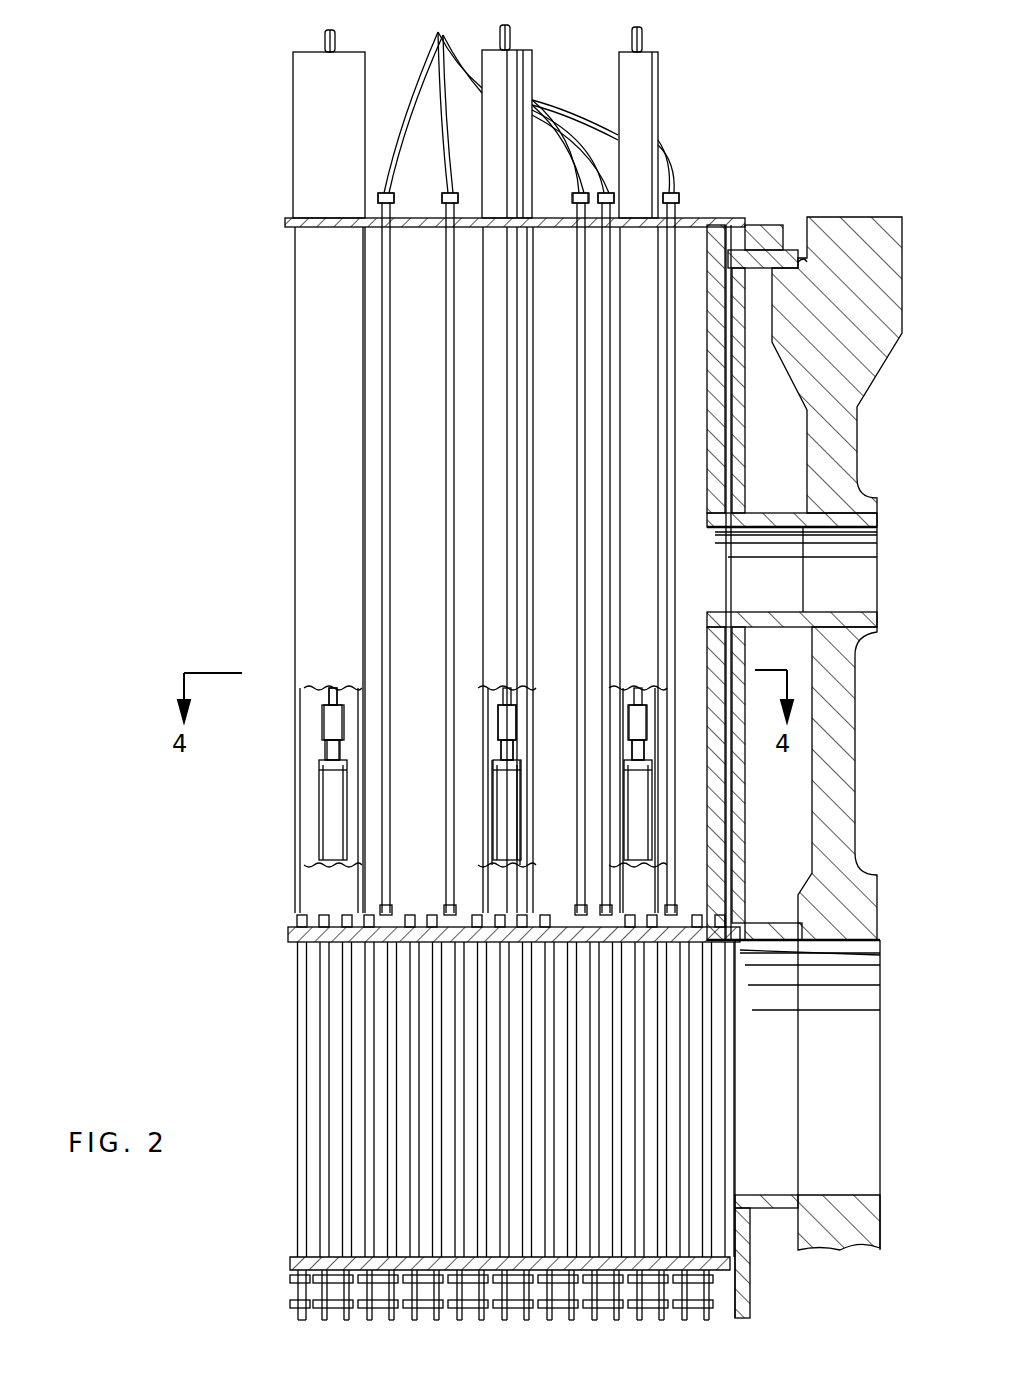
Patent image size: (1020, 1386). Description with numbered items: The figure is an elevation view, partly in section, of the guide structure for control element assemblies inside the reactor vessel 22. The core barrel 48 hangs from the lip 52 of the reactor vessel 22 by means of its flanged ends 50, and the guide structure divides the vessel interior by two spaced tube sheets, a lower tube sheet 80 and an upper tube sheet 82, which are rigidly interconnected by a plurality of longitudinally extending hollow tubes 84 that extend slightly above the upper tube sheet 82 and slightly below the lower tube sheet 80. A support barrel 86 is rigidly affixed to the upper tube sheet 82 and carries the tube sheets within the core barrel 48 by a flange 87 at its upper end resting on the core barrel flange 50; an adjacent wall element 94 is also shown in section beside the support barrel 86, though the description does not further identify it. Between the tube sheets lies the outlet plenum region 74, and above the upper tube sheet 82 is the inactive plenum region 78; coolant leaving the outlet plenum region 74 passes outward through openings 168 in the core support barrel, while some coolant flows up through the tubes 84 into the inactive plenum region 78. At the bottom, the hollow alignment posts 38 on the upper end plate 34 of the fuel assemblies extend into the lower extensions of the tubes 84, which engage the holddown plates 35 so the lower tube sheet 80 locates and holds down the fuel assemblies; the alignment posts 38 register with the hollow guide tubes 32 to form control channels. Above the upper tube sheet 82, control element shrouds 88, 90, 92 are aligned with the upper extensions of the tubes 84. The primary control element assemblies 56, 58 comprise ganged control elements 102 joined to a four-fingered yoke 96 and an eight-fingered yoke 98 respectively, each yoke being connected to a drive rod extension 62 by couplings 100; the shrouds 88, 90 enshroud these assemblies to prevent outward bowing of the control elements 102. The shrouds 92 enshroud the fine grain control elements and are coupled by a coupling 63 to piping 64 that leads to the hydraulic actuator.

The reactor vessel 22 is at (855, 770).
The hollow guide tubes 32 is at (298, 1315).
The upper end plate 34 is at (300, 1302).
The holddown plates 35 is at (300, 1278).
The hollow alignment posts 38 is at (300, 1290).
The core barrel 48 is at (741, 450).
The flanged ends 50 is at (788, 270).
The lip 52 is at (808, 262).
The 4-fingered control element assembly 56 is at (518, 722).
The 8-fingered control element assembly 58 is at (630, 692).
The drive rod extension 62 is at (325, 40).
The coupling 63 is at (390, 193).
The piping 64 is at (422, 65).
The outlet plenum region 74 is at (516, 1099).
The inactive plenum region 78 is at (428, 531).
The lower tube sheet 80 is at (300, 1265).
The upper tube sheet 82 is at (290, 936).
The hollow tubes 84 is at (353, 1008).
The support barrel 86 is at (712, 922).
The flange 87 is at (755, 240).
The control element shroud 88 is at (520, 323).
The control element shroud 90 is at (300, 103).
The shrouds or tubing 92 is at (445, 320).
The outer wall 94 is at (708, 220).
The 4-fingered yoke 96 is at (500, 775).
The 8-fingered yoke 98 is at (300, 745).
The couplings 100 is at (322, 720).
The control elements 102 is at (347, 800).
The openings 168 is at (779, 1194).